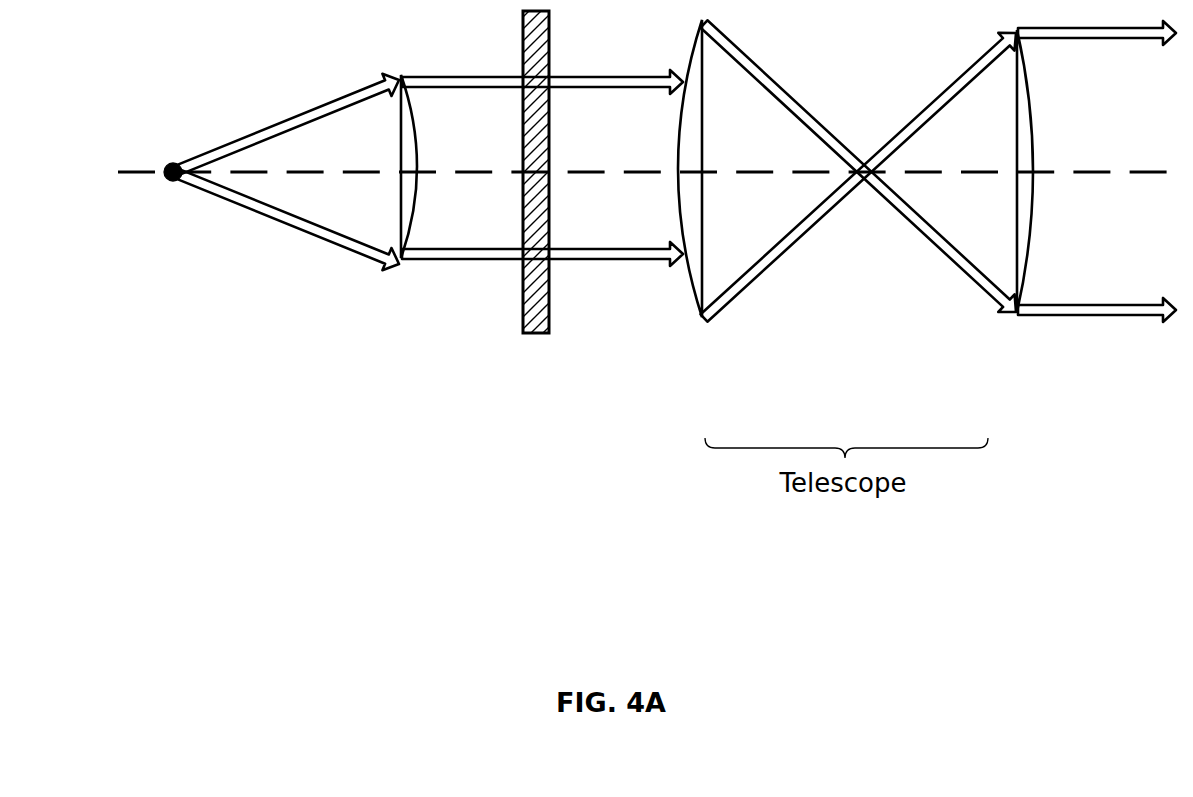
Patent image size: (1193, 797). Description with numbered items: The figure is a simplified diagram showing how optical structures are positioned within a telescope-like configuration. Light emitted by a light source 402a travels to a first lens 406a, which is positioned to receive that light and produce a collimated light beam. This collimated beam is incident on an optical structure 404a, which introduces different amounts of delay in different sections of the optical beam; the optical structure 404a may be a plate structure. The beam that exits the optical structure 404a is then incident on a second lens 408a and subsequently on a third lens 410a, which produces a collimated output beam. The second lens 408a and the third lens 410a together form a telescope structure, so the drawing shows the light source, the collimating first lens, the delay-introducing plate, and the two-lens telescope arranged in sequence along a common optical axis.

The light source 402a is at (172, 185).
The optical structure 404a is at (537, 225).
The first lens 406a is at (392, 225).
The second lens 408a is at (697, 224).
The third lens 410a is at (1018, 224).